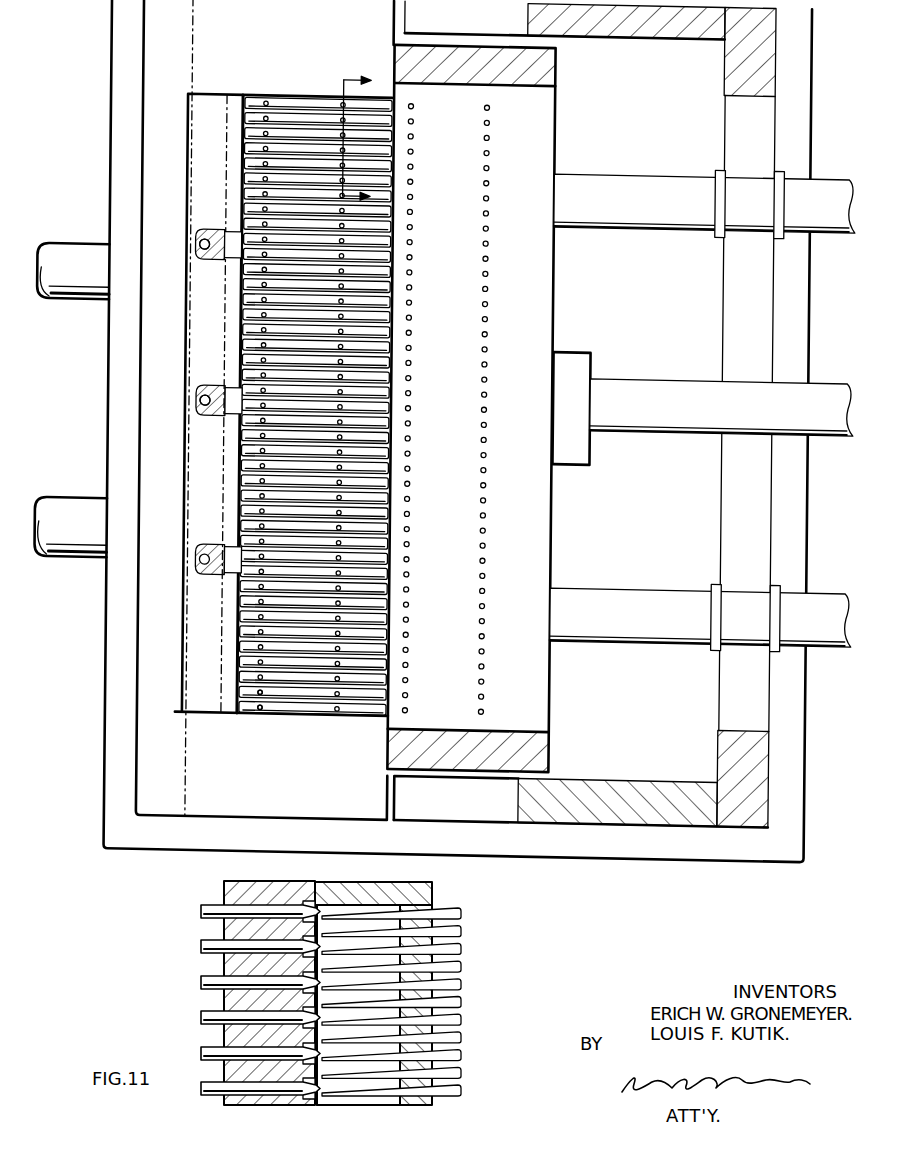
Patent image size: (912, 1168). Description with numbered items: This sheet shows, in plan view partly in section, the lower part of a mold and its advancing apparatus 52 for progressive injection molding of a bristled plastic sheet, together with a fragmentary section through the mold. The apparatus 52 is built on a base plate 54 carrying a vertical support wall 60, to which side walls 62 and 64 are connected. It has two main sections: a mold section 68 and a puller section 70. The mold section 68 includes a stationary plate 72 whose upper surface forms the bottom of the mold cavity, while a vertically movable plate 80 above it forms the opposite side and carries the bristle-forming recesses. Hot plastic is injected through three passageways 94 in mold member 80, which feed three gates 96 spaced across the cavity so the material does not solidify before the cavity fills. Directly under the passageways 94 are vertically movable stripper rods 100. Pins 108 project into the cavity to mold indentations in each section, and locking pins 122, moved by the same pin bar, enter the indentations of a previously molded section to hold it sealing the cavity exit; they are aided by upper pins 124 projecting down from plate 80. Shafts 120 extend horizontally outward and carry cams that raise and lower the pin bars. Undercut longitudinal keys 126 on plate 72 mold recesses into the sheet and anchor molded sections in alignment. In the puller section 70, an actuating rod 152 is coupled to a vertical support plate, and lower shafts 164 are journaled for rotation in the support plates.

In FIG. 4, the apparatus 52 is at (96, 25).
In FIG. 4, the base plate 54 is at (118, 760).
In FIG. 4, the vertical support wall 60 is at (723, 732).
In FIG. 4, the side wall 62 is at (628, 19).
In FIG. 4, the side wall 64 is at (630, 779).
In FIG. 4, the mold section 68 is at (186, 397).
In FIG. 4, the puller section 70 is at (559, 291).
In FIG. 11, the plate 72 is at (234, 890).
In FIG. 11, the vertically movable plate 80 is at (430, 889).
In FIG. 4, the passageway 94 is at (199, 231).
In FIG. 4, the gate 96 is at (198, 346).
In FIG. 4, the stripper rod 100 is at (198, 245).
In FIG. 4, the pin 108 is at (269, 688).
In FIG. 4, the shaft 120 is at (94, 247).
In FIG. 4, the locking pin 122 is at (344, 686).
In FIG. 11, the locking pin 122 is at (180, 984).
In FIG. 11, the upper pin 124 is at (462, 986).
In FIG. 4, the key 126 is at (284, 405).
In FIG. 11, the key 126 is at (308, 1037).
In FIG. 4, the actuating rod 152 is at (656, 414).
In FIG. 4, the lower shaft 164 is at (647, 212).